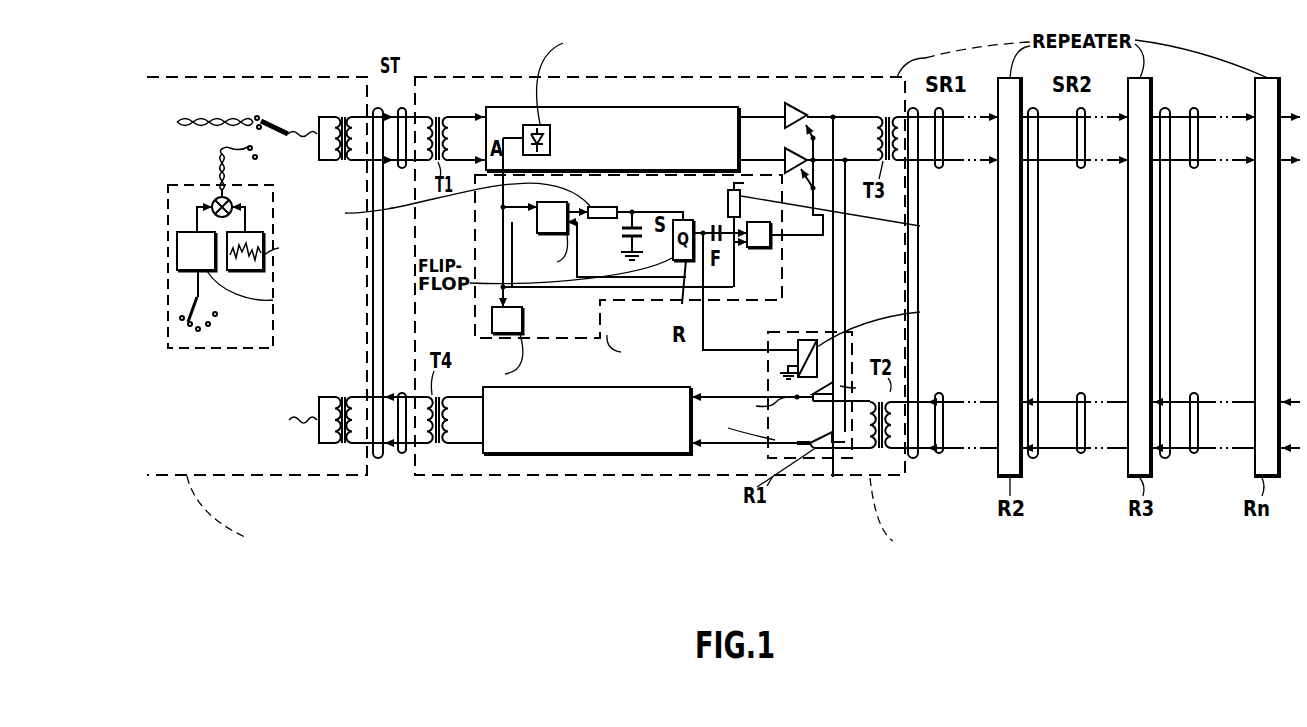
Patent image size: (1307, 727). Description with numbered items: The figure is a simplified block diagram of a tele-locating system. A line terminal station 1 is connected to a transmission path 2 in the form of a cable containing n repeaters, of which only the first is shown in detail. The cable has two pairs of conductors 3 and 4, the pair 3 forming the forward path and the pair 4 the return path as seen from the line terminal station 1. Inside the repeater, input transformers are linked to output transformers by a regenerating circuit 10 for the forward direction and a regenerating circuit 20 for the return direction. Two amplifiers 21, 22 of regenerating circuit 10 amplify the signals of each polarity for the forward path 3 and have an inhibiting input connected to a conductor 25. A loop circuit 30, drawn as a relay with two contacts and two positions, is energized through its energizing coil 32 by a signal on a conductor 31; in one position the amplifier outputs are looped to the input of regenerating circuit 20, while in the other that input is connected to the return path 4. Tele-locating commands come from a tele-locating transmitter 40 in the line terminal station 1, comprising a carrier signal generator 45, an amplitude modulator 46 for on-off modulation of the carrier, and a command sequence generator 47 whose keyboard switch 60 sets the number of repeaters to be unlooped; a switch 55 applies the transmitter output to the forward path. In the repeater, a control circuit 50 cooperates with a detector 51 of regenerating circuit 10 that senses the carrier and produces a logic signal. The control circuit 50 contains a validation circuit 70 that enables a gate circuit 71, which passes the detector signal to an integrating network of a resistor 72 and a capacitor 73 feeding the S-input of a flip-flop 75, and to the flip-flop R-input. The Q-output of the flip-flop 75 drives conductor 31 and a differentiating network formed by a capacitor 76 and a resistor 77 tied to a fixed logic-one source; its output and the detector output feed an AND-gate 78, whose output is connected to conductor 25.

The line terminal station 1 is at (236, 475).
The transmission path 2 is at (378, 458).
The pair of conductors (forward path) 3 is at (402, 168).
The pair of conductors (return path) 4 is at (402, 453).
The regenerating circuit 10 is at (722, 107).
The regenerating circuit 20 is at (580, 387).
The amplifier 21 is at (801, 108).
The amplifier 22 is at (790, 150).
The conductor 25 is at (796, 204).
The loop circuit 30 is at (768, 453).
The conductor 31 is at (756, 350).
The energizing coil 32 is at (806, 340).
The tele-locating transmitter 40 is at (207, 350).
The carrier signal generator 45 is at (230, 270).
The amplitude modulator 46 is at (236, 205).
The command sequence generator 47 is at (177, 258).
The control circuit 50 is at (632, 306).
The detector 51 is at (551, 139).
The switch 55 is at (279, 118).
The keyboard switch 60 is at (197, 304).
The validation circuit 70 is at (522, 318).
The gate circuit 71 is at (548, 203).
The resistor 72 is at (597, 207).
The capacitor 73 is at (622, 233).
The flip-flop 75 is at (652, 250).
The capacitor 76 is at (714, 222).
The resistor 77 is at (741, 205).
The AND-gate 78 is at (760, 248).